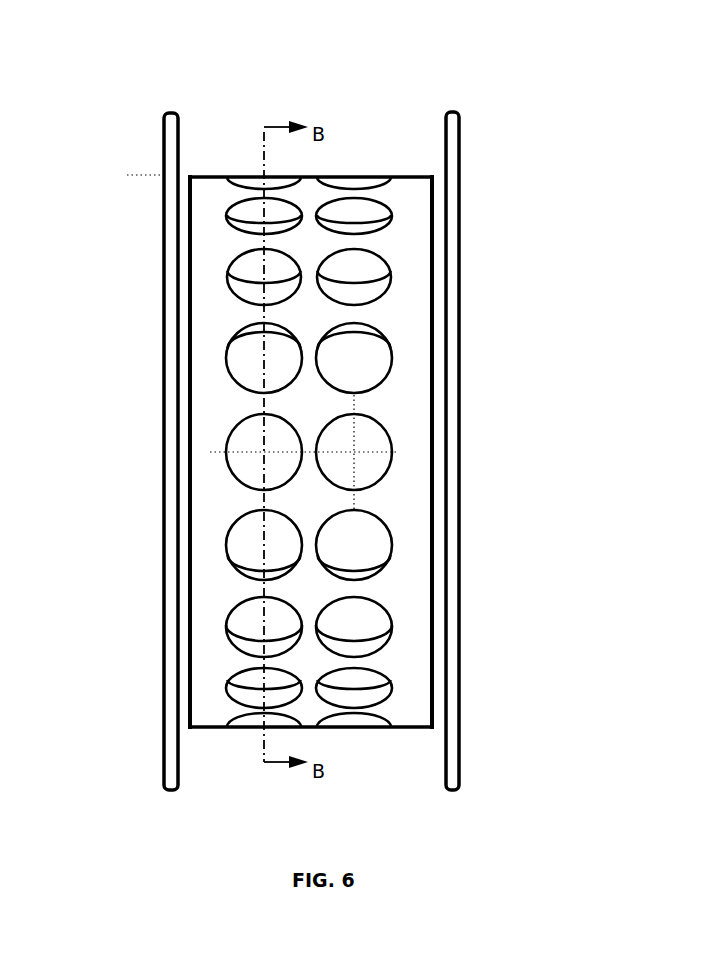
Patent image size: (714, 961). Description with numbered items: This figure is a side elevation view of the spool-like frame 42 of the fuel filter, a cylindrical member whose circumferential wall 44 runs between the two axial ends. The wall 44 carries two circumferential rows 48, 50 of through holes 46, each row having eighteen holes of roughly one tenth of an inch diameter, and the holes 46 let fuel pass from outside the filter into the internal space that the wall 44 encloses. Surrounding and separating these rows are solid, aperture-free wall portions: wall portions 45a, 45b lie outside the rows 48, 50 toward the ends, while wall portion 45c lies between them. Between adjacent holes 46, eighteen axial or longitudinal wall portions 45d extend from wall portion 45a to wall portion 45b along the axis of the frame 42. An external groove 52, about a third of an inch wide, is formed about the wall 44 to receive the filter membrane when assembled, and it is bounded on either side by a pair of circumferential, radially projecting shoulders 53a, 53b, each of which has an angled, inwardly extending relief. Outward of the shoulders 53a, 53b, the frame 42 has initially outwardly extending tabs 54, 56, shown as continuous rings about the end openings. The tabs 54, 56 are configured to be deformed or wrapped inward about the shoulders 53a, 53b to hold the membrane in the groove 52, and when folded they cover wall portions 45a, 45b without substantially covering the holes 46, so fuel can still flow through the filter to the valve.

The frame 42 is at (369, 424).
The circumferential wall 44 is at (409, 313).
The wall portion 45a is at (208, 287).
The wall portion 45b is at (402, 577).
The wall portion 45c is at (305, 586).
The longitudinal wall portion 45d is at (240, 243).
The through holes 46 is at (358, 175).
The row of holes 48 is at (247, 728).
The row of holes 50 is at (359, 730).
The external groove 52 is at (320, 175).
The shoulder 53a is at (189, 172).
The shoulder 53b is at (430, 170).
The tab 54 is at (165, 152).
The tab 56 is at (460, 152).